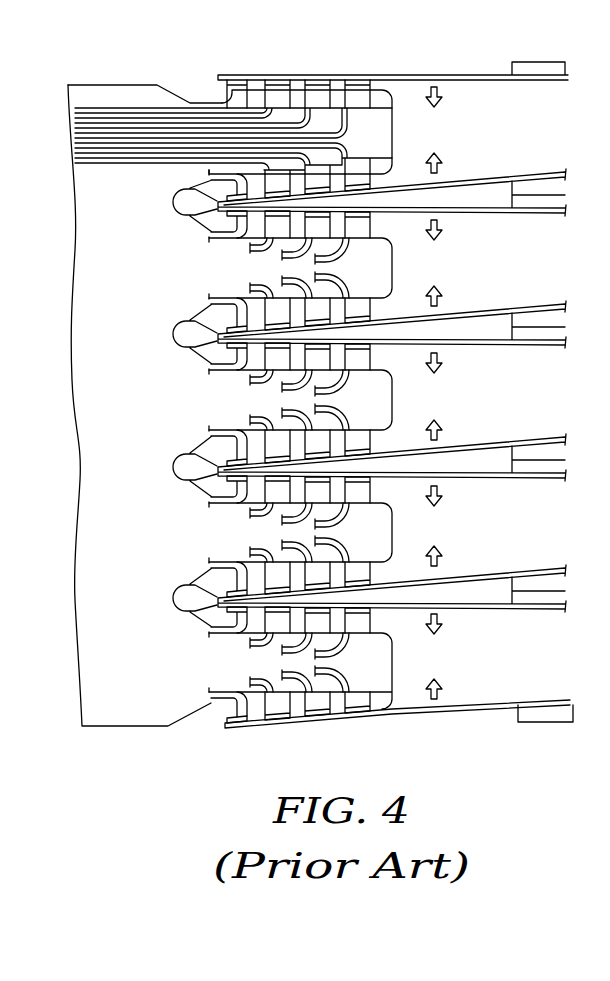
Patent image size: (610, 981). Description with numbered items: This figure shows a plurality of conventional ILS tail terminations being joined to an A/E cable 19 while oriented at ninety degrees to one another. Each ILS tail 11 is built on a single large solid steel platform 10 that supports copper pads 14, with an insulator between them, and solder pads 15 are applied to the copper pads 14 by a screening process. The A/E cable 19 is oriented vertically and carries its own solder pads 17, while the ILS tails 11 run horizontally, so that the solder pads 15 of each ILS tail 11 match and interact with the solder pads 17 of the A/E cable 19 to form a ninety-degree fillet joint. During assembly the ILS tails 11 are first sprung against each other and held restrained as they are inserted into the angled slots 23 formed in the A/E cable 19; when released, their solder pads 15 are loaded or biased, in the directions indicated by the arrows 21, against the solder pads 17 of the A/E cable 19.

The platform 10 is at (431, 714).
The ILS tail 11 is at (545, 694).
The copper pads 14 is at (211, 727).
The solder pads 15 is at (411, 700).
The solder pads 17 is at (361, 701).
The A/E cable 19 is at (409, 647).
The arrows 21 is at (451, 687).
The angled slots 23 is at (406, 590).